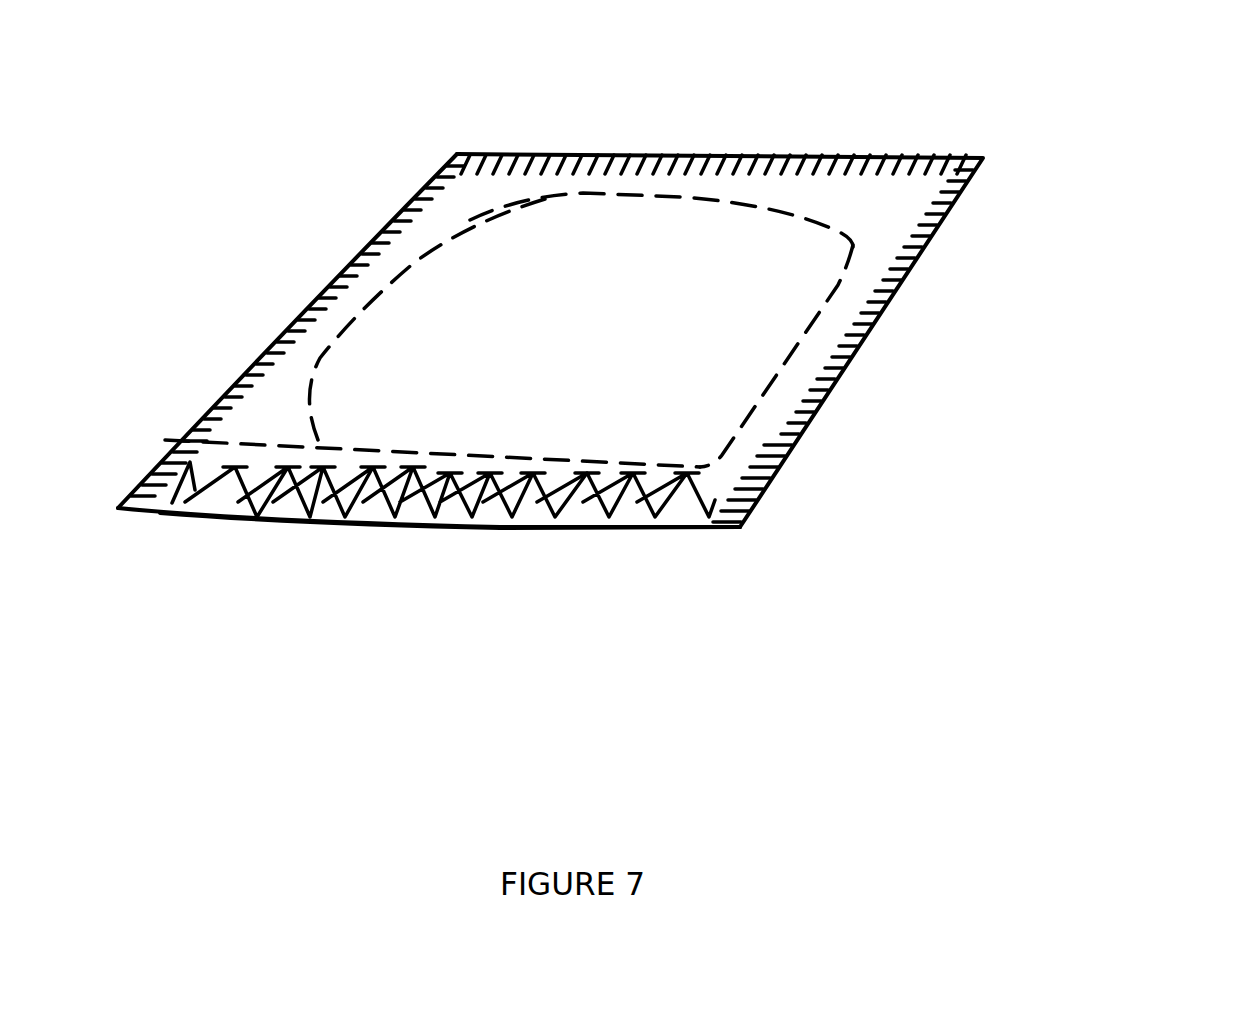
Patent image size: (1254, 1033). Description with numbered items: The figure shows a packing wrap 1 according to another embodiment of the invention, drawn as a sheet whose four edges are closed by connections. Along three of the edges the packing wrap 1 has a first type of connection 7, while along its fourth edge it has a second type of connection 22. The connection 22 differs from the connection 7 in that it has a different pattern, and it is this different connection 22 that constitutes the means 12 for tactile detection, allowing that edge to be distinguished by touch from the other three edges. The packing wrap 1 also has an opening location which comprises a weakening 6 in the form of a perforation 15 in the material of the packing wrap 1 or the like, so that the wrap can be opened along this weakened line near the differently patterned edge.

The packing wrap 1 is at (880, 227).
The first type of connection 7 is at (260, 100).
The perforation 15 is at (503, 463).
The weakening 6 is at (573, 530).
The means for tactile detection 12 is at (652, 533).
The second type of connection 22 is at (390, 527).